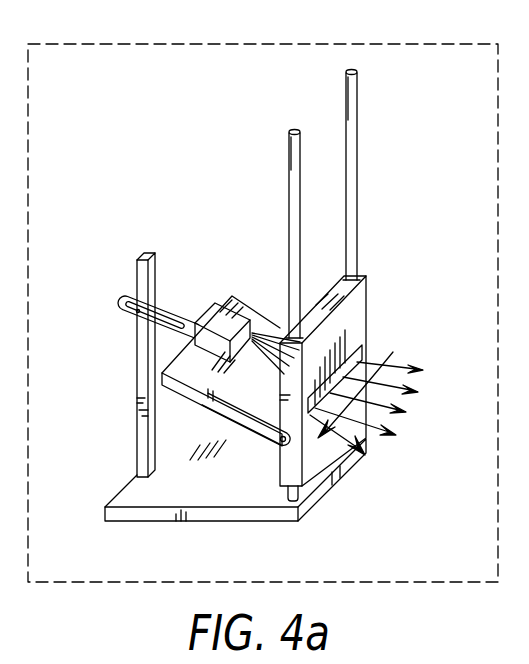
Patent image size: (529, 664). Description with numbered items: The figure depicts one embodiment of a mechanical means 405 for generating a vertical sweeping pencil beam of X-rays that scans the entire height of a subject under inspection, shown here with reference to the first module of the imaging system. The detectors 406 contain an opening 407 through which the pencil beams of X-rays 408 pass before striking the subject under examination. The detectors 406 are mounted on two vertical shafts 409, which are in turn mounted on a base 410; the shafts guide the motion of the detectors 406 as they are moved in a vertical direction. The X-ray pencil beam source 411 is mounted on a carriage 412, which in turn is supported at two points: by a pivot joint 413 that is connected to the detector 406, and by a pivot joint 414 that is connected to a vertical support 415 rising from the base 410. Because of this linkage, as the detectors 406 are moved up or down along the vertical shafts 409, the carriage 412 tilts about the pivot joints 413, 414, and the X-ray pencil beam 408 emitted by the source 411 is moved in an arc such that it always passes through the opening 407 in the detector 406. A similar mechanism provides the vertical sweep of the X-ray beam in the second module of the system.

The optical characterization system 405 is at (145, 43).
The detectors 406 is at (366, 298).
The opening 407 is at (362, 353).
The pencil beams of X-rays 408 is at (400, 362).
The vertical shafts 409 is at (346, 128).
The base 410 is at (130, 498).
The X-ray pencil beam source 411 is at (213, 315).
The carriage 412 is at (190, 390).
The pivot joint 413 is at (268, 444).
The pivot joint 414 is at (125, 318).
The vertical support 415 is at (137, 268).